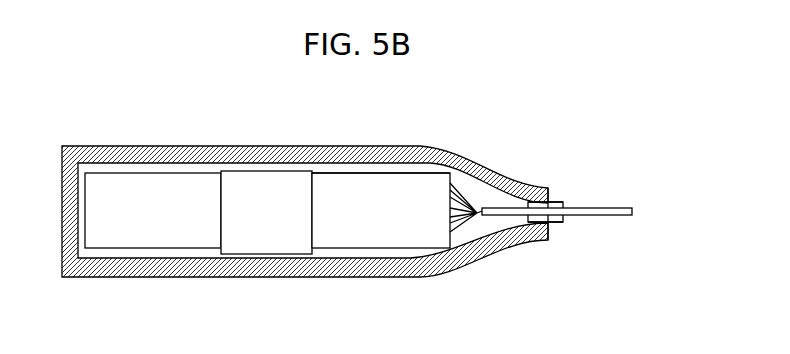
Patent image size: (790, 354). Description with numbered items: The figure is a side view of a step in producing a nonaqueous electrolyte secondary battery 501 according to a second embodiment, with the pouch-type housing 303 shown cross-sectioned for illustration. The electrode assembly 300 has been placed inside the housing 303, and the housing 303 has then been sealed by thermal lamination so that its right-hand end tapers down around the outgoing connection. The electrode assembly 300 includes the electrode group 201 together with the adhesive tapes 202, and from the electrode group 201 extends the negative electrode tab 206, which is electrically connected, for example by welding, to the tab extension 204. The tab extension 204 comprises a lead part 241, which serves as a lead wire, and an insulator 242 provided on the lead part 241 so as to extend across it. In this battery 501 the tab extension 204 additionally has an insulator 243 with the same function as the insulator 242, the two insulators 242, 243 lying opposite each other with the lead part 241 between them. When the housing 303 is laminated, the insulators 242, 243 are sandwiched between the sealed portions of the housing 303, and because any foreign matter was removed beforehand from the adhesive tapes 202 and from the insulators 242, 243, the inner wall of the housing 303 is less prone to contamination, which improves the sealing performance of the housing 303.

The nonaqueous electrolyte secondary battery 501 is at (521, 111).
The housing 303 is at (280, 277).
The adhesive tapes 202 is at (263, 186).
The electrode group 201 is at (344, 188).
The electrode assembly 300 is at (392, 172).
The negative electrode tab 206 is at (461, 192).
The tab extension 204 is at (617, 204).
The lead part 241 is at (622, 215).
The insulator 242 is at (565, 203).
The insulator 243 is at (565, 222).